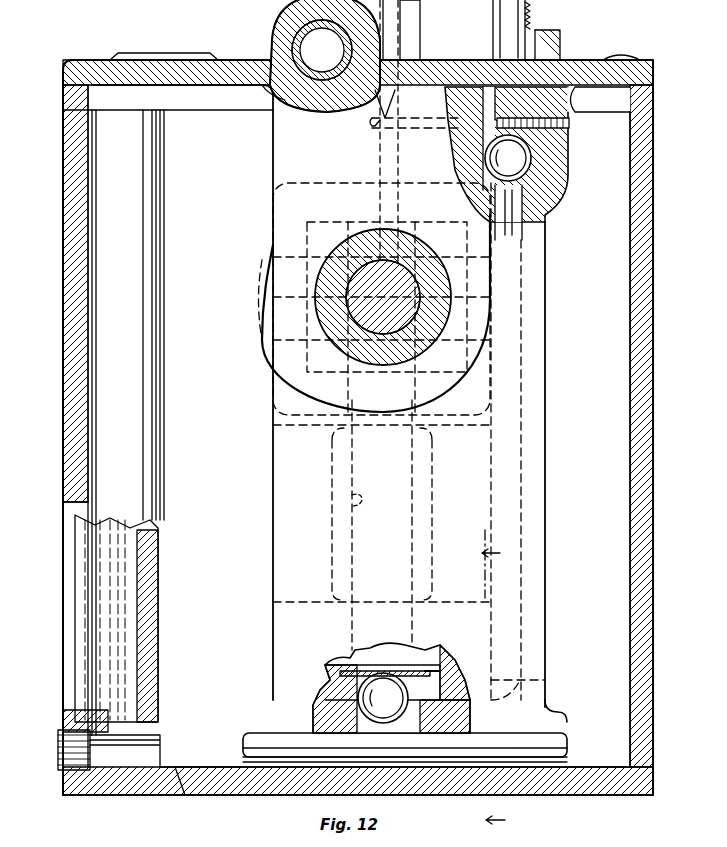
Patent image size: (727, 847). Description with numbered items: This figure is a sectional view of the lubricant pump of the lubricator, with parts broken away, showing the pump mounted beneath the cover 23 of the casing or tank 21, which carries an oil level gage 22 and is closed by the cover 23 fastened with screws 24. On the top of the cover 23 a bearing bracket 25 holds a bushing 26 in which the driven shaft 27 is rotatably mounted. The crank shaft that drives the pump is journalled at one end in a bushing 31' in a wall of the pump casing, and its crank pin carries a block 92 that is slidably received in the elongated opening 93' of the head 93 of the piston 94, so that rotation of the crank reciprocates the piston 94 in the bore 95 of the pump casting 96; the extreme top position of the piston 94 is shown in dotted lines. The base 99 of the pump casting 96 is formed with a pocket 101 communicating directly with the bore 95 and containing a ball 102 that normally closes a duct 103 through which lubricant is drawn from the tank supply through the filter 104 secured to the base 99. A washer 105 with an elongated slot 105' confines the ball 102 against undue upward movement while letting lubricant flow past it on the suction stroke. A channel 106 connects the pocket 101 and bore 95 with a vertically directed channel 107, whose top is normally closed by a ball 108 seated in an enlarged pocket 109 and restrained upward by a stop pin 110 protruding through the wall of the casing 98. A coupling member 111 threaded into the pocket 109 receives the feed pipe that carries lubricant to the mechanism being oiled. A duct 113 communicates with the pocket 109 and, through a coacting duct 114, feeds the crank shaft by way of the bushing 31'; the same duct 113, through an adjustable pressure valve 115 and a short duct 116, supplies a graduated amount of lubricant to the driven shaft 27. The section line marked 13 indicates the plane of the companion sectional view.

The casing or tank 21 is at (652, 420).
The oil level gage 22 is at (88, 585).
The cover 23 is at (192, 60).
The screws 24 is at (638, 58).
The bearing bracket 25 is at (275, 40).
The bushing 26 is at (288, 24).
The shaft 27 is at (322, 50).
The bushing 31' is at (356, 313).
The block 92 is at (273, 366).
The head 93 is at (355, 299).
The elongated opening 93' is at (347, 318).
The piston 94 is at (381, 525).
The bore 95 is at (352, 498).
The pump casting 96 is at (332, 460).
The casing 98 is at (547, 530).
The base 99 is at (250, 721).
The pocket 101 is at (345, 668).
The ball 102 is at (360, 695).
The duct 103 is at (455, 728).
The filter 104 is at (292, 752).
The washer 105 is at (450, 663).
The elongated slot 105' is at (365, 652).
The channel 106 is at (522, 684).
The vertically directed channel 107 is at (515, 477).
The ball 108 is at (568, 182).
The pocket 109 is at (530, 143).
The stop pin 110 is at (570, 102).
The coupling member 111 is at (545, 38).
The duct 113 is at (422, 128).
The duct 114 is at (380, 152).
The adjustable pressure valve 115 is at (398, 99).
The short duct 116 is at (362, 104).
The section line 13- 13 is at (478, 680).